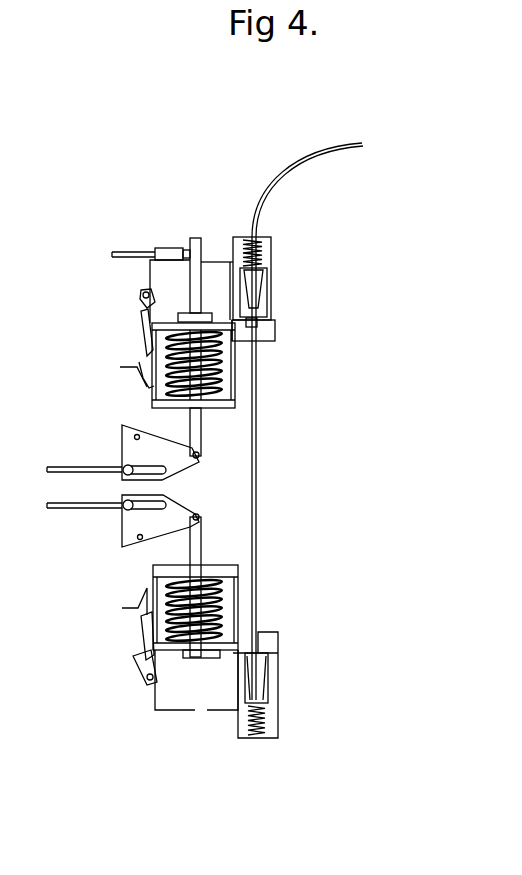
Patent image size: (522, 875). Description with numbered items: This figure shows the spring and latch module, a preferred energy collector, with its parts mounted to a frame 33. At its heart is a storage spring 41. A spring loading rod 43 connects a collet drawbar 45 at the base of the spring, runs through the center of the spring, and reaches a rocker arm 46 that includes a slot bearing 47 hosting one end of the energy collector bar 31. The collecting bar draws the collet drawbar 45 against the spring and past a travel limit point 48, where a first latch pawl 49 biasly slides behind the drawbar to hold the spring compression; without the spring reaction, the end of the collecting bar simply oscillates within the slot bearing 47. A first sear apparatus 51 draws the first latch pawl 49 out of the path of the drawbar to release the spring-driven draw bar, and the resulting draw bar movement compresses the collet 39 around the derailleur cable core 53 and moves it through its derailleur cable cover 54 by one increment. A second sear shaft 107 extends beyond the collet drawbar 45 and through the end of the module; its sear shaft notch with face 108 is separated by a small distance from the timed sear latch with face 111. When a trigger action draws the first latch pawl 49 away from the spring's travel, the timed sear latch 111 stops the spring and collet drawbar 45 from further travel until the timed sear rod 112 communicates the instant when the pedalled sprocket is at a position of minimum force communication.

The energy collector bar 31 is at (88, 498).
The frame 33 is at (215, 258).
The collet 39 is at (380, 272).
The storage spring 41 is at (228, 604).
The spring loading rod 43 is at (203, 438).
The collet drawbar 45 is at (233, 333).
The rocker arm 46 is at (195, 470).
The slot bearing 47 is at (150, 507).
The travel limit point 48 is at (147, 328).
The first latch pawl 49 is at (130, 316).
The first sear apparatus 51 is at (102, 509).
The derailleur cable core 53 is at (258, 350).
The derailleur cable cover 54 is at (298, 172).
The second sear shaft 107 is at (179, 230).
The sear shaft notch with face 108 is at (120, 199).
The timed sear latch with face 111 is at (125, 213).
The timed sear rod 112 is at (106, 233).